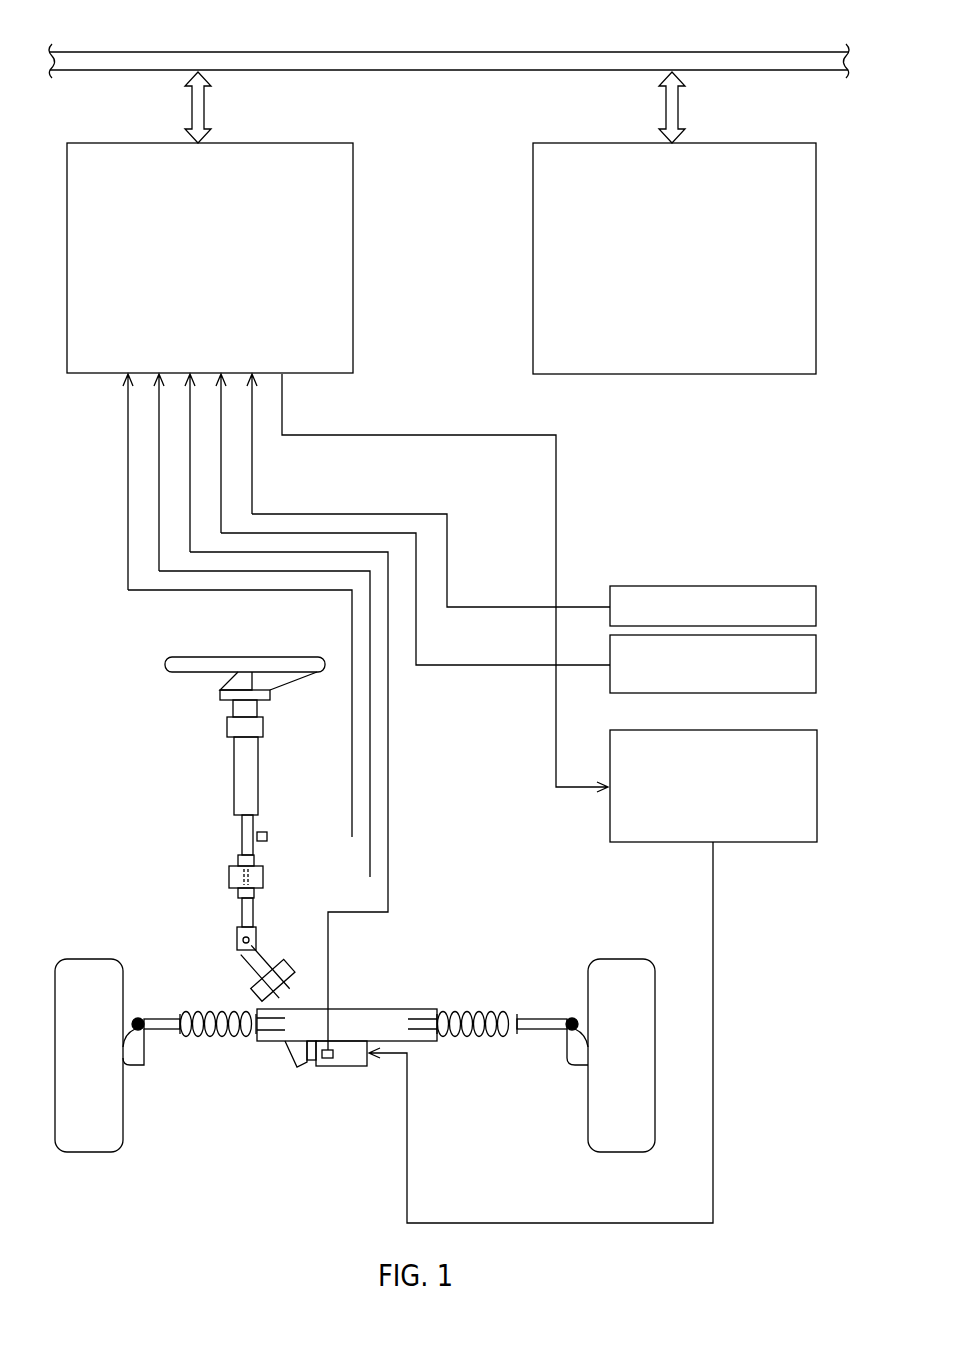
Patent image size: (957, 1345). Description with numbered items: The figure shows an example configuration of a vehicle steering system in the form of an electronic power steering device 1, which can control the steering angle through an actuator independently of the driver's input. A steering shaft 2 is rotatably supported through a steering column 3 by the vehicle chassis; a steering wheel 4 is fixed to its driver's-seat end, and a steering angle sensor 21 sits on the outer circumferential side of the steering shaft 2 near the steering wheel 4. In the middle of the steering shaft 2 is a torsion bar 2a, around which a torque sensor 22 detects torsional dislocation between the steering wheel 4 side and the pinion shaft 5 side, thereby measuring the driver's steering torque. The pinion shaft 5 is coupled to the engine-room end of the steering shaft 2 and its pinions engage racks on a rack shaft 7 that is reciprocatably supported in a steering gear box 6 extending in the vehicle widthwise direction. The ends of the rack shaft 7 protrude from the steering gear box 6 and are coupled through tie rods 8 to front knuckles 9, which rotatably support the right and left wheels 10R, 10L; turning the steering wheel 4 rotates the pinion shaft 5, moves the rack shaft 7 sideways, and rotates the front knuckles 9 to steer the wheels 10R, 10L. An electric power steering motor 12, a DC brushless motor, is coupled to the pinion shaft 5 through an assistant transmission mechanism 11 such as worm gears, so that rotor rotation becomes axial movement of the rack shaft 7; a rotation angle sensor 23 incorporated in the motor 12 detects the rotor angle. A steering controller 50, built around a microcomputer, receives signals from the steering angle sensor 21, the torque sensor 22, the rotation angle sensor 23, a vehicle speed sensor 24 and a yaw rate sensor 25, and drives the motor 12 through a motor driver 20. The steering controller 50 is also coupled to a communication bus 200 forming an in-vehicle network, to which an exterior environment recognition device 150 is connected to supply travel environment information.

The communication bus 200 is at (457, 50).
The steering controller 50 is at (274, 143).
The exterior environment recognition device 150 is at (774, 143).
The yaw rate sensor 25 is at (816, 605).
The vehicle speed sensor 24 is at (816, 664).
The motor driver 20 is at (817, 787).
The electronic power steering device 1 is at (88, 654).
The steering wheel 4 is at (243, 657).
The steering column 3 is at (234, 769).
The steering shaft 2 is at (242, 838).
The steering angle sensor 21 is at (268, 833).
The torque sensor 22 is at (270, 878).
The torsion bar 2a is at (247, 870).
The pinion shaft 5 is at (250, 968).
The steering gear box 6 is at (359, 1009).
The rack shaft 7 is at (423, 1018).
The assistant transmission mechanism 11 is at (286, 1053).
The electric power steering motor 12 is at (356, 1067).
The rotation angle sensor 23 is at (327, 1060).
The tie rod 8 is at (169, 1030).
The front knuckle 9 is at (131, 1066).
The right wheel 10R is at (90, 1152).
The left wheel 10L is at (621, 1152).